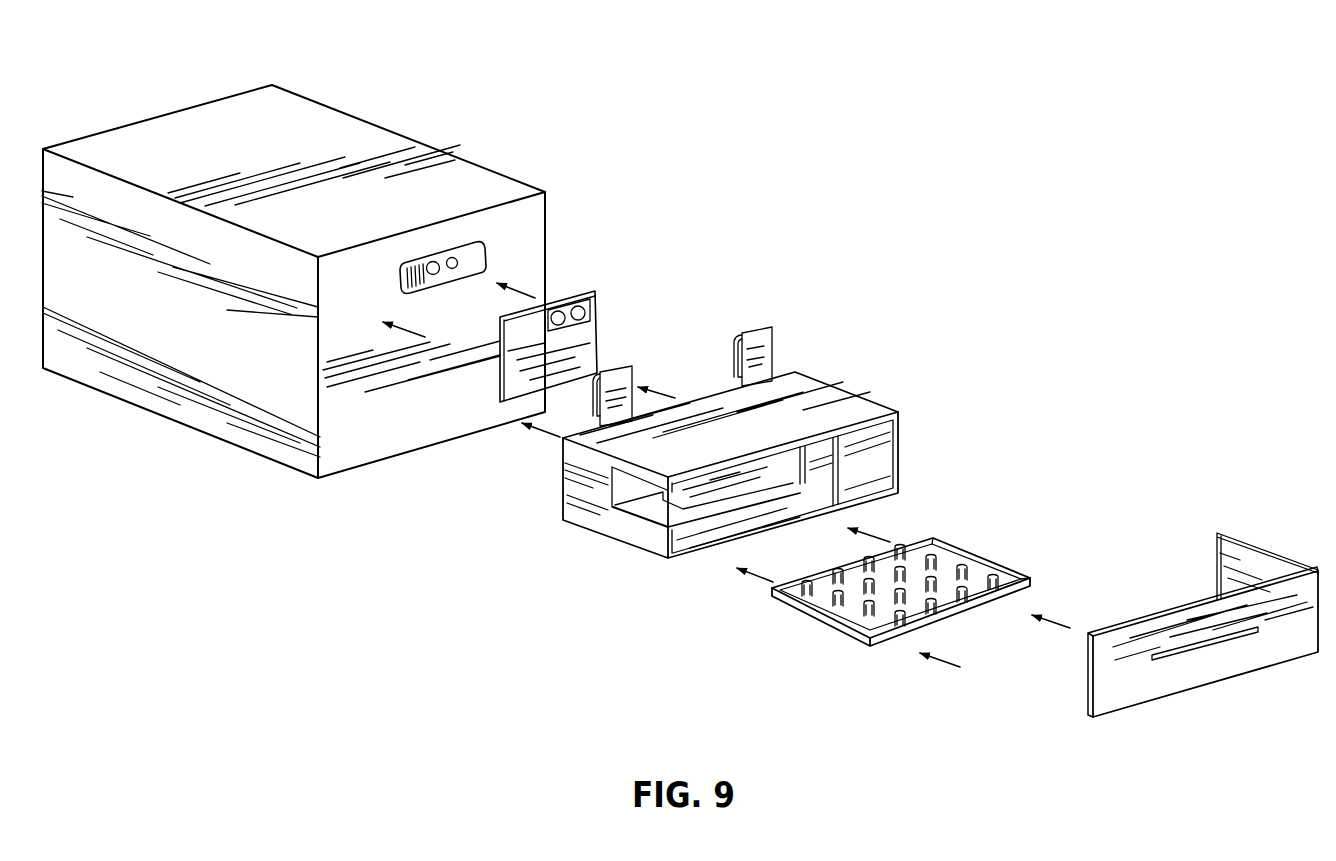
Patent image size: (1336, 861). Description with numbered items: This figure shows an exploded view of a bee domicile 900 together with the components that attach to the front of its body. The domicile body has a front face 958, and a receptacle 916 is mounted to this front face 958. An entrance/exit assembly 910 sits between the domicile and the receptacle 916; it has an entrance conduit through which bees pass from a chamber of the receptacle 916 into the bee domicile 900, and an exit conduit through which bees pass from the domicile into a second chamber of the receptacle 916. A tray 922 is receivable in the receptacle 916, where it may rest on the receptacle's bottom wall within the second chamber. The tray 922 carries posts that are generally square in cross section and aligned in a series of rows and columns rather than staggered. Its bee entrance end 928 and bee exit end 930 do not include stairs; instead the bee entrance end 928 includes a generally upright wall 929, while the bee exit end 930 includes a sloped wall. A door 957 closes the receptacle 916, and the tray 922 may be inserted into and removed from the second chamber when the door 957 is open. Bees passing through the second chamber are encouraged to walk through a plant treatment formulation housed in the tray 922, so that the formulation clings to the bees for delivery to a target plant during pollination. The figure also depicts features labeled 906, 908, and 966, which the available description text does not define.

The bee domicile 900 is at (512, 141).
The handle plate 906 is at (428, 262).
The handle opening 908 is at (465, 277).
The entrance/exit assembly 910 is at (588, 330).
The front face 958 is at (527, 223).
The clip 966 is at (623, 367).
The receptacle 916 is at (863, 410).
The tray 922 is at (1000, 600).
The bee entrance end 928 is at (1003, 558).
The upright wall 929 is at (1012, 577).
The bee exit end 930 is at (813, 623).
The door 957 is at (1112, 695).